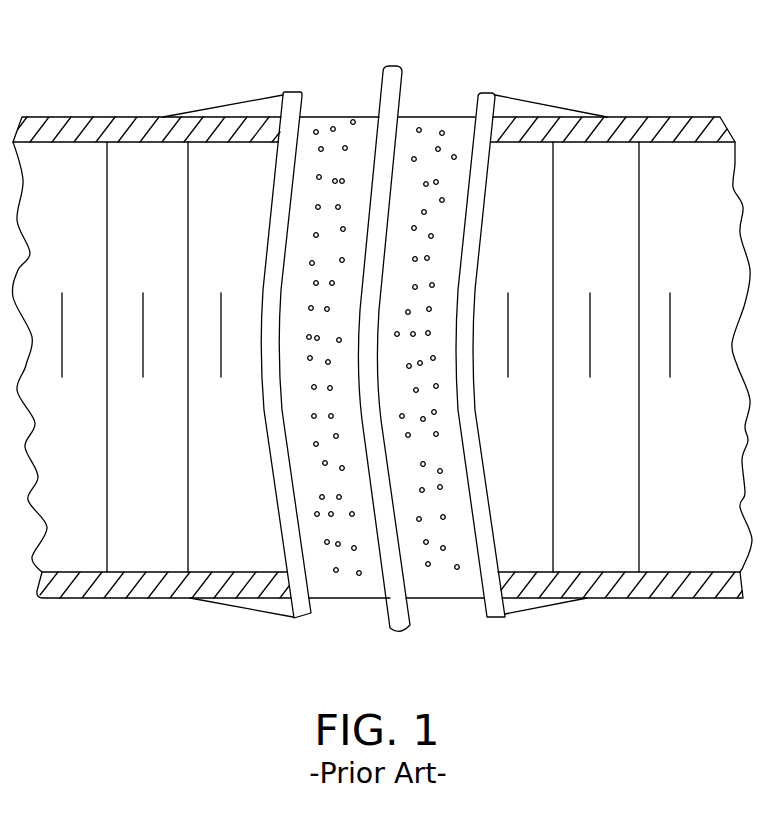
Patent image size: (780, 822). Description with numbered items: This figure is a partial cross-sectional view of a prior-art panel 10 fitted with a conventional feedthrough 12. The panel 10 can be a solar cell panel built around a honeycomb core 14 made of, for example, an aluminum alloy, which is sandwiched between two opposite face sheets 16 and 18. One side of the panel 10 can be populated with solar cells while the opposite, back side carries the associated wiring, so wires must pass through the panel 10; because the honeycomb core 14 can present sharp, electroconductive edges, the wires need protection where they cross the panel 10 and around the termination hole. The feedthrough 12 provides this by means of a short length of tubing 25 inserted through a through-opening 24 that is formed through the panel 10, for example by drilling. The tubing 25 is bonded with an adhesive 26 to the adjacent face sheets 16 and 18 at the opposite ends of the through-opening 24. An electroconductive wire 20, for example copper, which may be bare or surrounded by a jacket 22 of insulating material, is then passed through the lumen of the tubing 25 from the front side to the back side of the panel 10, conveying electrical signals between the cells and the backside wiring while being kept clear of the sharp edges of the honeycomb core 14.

The panel 10 is at (614, 107).
The feedthrough 12 is at (337, 77).
The honeycomb core 14 is at (157, 237).
The face sheet 16 is at (103, 124).
The face sheet 18 is at (79, 600).
The electroconductive wire 20 is at (391, 66).
The jacket 22 is at (358, 584).
The through-opening 24 is at (479, 172).
The tubing 25 is at (478, 582).
The adhesive 26 is at (262, 108).